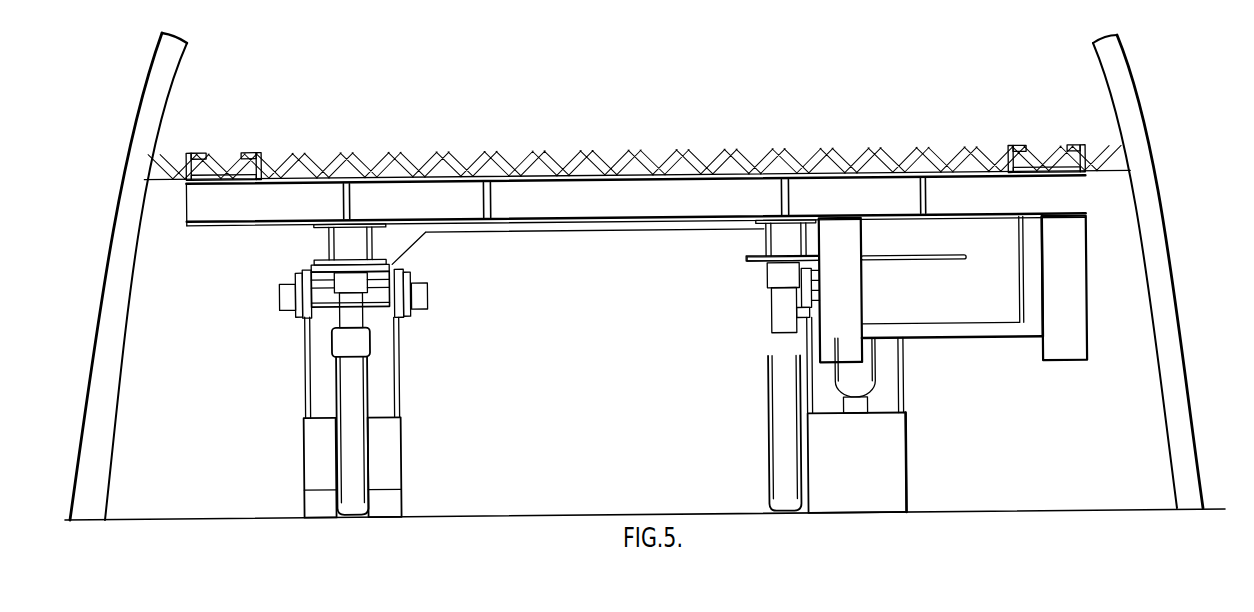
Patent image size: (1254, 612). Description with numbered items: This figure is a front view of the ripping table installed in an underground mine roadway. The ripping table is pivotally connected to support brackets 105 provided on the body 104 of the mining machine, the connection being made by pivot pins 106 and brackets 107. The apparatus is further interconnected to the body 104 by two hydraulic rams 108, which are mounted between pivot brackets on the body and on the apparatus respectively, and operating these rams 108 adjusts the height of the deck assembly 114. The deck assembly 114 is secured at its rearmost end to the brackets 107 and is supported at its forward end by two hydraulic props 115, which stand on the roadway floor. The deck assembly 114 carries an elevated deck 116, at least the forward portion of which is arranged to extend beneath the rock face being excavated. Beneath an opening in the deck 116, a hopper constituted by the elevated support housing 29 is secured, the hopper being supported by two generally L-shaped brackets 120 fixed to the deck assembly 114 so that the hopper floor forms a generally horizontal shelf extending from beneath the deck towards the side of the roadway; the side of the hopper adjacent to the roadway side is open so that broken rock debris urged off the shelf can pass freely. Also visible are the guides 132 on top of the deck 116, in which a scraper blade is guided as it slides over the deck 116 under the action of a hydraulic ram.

The elevated support housing 29 is at (955, 306).
The body 104 is at (315, 457).
The support brackets 105 is at (408, 281).
The pivot pins 106 is at (377, 295).
The brackets 107 is at (397, 308).
The hydraulic rams 108 is at (332, 329).
The deck assembly 114 is at (572, 196).
The hydraulic props 115 is at (343, 410).
The elevated deck 116 is at (762, 171).
The L-shaped brackets 120 is at (835, 287).
The guides 132 is at (237, 171).